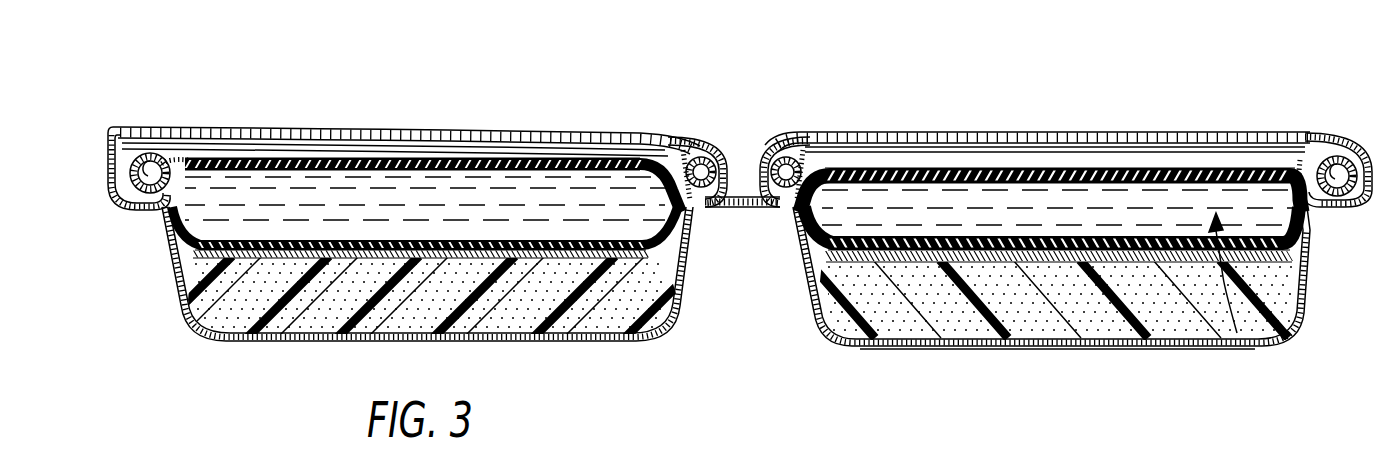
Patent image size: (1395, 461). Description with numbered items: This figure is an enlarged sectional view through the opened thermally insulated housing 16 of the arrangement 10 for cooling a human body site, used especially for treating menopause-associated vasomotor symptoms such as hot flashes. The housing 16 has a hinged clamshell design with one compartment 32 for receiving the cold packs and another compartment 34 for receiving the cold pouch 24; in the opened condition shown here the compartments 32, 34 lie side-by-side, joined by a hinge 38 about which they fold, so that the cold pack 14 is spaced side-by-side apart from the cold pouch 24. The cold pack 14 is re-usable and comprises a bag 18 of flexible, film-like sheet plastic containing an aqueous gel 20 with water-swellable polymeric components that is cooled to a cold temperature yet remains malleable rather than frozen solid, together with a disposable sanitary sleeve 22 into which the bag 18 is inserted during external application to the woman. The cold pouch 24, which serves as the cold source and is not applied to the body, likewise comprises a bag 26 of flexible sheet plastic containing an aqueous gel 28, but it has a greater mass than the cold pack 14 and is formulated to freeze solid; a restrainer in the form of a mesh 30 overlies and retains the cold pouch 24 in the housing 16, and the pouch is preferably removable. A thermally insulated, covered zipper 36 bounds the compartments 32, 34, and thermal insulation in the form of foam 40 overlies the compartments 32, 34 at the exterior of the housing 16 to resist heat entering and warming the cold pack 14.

The arrangement for cooling a human body site 10 is at (202, 120).
The cold pack 14 is at (1250, 338).
The thermally insulated housing 16 is at (1308, 298).
The bag 18 is at (1170, 273).
The aqueous gel 20 is at (1053, 233).
The sanitary sleeve 22 is at (1115, 168).
The pouch 24 is at (541, 212).
The bag 26 is at (357, 265).
The aqueous gel 28 is at (265, 222).
The mesh 30 is at (352, 160).
The compartment 32 is at (822, 170).
The compartment 34 is at (670, 146).
The zipper 36 is at (1297, 130).
The hinge 38 is at (736, 210).
The foam 40 is at (608, 330).